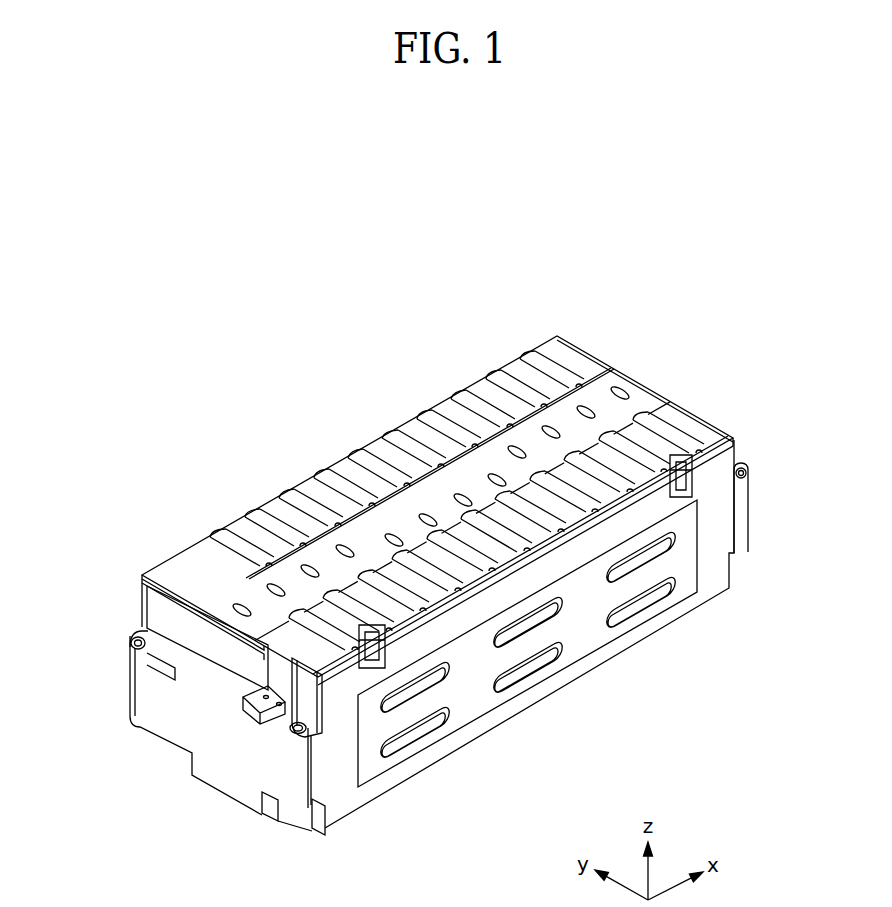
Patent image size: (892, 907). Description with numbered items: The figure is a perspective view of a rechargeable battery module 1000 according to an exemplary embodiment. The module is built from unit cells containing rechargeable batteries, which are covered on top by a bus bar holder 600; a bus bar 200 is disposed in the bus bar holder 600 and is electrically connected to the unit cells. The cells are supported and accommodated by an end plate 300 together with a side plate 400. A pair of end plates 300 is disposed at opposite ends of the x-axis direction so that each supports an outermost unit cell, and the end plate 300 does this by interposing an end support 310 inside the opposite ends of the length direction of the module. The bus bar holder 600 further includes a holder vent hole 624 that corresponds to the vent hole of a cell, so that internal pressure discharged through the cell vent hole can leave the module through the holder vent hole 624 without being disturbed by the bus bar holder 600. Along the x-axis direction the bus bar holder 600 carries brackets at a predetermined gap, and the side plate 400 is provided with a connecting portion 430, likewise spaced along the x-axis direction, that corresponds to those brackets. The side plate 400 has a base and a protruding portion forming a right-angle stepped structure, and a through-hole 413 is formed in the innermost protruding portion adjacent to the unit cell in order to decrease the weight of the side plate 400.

The battery module 1000 is at (395, 304).
The bus bar 200 is at (313, 494).
The end plate 300 is at (190, 783).
The end support 310 is at (217, 662).
The side plate 400 is at (655, 648).
The through-hole 413 is at (530, 667).
The connecting portion 430 is at (683, 472).
The bus bar holder 600 is at (655, 380).
The holder vent hole 624 is at (267, 587).